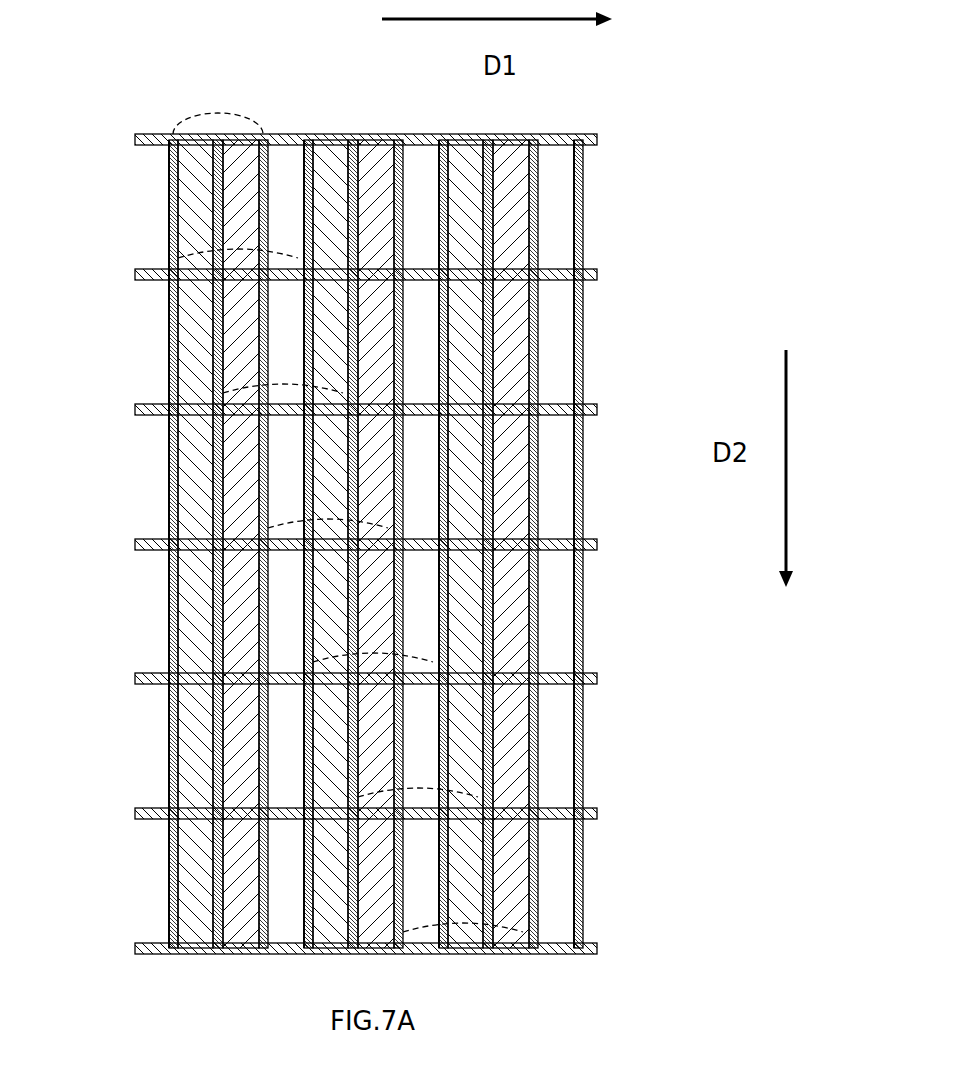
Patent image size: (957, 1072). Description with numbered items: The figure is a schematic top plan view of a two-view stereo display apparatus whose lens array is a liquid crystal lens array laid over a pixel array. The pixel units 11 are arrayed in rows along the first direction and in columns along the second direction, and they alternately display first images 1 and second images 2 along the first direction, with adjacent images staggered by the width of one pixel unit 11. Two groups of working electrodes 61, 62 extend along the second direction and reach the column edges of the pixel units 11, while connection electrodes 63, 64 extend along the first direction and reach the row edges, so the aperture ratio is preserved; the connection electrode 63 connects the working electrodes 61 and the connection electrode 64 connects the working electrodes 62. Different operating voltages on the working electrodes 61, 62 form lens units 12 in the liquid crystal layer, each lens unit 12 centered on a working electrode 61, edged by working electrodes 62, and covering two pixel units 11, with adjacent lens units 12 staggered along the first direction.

The pixel unit 11 is at (555, 200).
The lens unit 12 is at (275, 253).
The working electrode 61 is at (178, 172).
The working electrode 62 is at (260, 234).
The connection electrode 63 is at (597, 139).
The connection electrode 64 is at (597, 276).
The first image 1 is at (350, 559).
The second image 2 is at (354, 548).